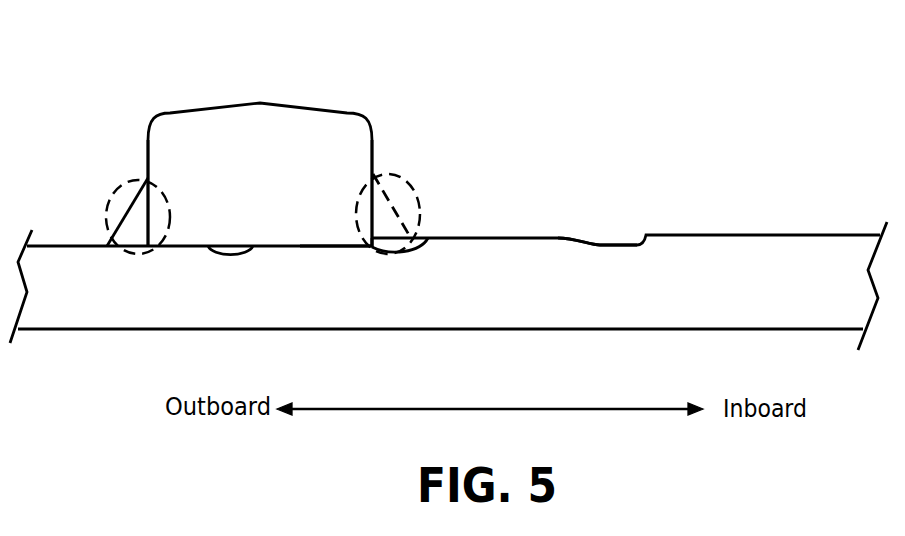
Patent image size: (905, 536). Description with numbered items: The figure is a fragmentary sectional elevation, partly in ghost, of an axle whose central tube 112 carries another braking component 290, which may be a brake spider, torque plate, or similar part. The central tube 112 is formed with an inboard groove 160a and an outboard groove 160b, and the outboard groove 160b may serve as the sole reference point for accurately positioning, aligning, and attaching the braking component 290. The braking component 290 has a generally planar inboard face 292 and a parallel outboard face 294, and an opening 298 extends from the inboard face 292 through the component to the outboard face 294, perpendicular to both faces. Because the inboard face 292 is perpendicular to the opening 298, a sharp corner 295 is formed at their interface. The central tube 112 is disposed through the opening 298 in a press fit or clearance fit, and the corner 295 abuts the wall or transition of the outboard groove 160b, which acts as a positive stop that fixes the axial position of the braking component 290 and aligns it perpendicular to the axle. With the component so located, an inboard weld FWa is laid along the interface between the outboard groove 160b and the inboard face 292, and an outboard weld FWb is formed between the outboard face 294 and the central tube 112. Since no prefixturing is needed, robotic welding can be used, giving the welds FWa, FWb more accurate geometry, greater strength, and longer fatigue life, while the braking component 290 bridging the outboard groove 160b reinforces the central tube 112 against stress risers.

The central tube 112 is at (718, 232).
The inboard groove 160a is at (618, 244).
The outboard groove 160b is at (358, 252).
The braking component 290 is at (247, 102).
The inboard face 292 is at (373, 140).
The outboard face 294 is at (148, 150).
The corner 295 is at (428, 238).
The opening 298 is at (253, 245).
The inboard weld FWa is at (400, 177).
The outboard weld FWb is at (133, 194).